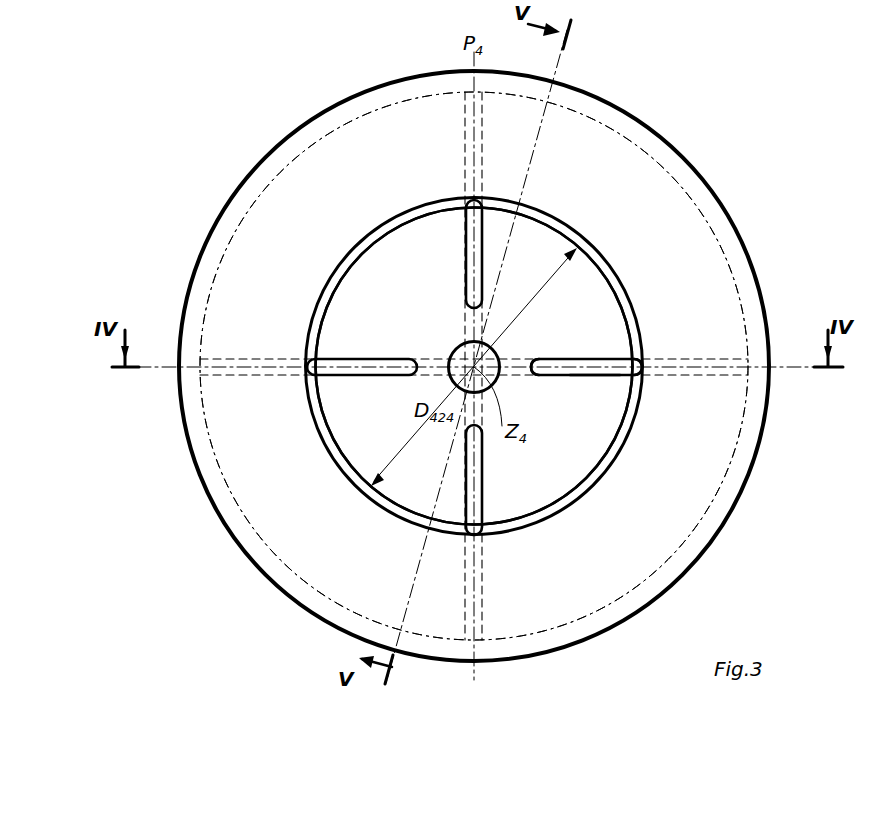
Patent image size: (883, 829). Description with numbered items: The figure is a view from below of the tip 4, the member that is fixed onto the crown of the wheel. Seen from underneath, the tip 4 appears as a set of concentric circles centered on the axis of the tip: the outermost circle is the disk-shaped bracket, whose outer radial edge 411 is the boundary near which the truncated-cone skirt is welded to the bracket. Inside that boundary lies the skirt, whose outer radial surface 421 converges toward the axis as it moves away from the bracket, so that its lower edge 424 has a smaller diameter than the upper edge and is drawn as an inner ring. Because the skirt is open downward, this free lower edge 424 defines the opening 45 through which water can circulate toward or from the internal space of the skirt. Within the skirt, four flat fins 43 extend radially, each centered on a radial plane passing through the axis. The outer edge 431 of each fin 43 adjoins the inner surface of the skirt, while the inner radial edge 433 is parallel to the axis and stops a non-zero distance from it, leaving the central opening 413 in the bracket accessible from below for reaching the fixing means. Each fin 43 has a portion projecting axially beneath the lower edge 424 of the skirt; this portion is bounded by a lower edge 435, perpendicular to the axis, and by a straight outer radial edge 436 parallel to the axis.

The tip 4 is at (702, 125).
The outer radial edge 411 is at (750, 239).
The central opening 413 is at (465, 357).
The outer radial surface 421 is at (676, 480).
The lower edge 424 is at (331, 430).
The fins 43 is at (466, 262).
The outer edge 431 is at (248, 357).
The inner radial edge 433 is at (526, 367).
The lower edge 435 is at (598, 377).
The outer radial edge 436 is at (646, 375).
The opening 45 is at (559, 452).